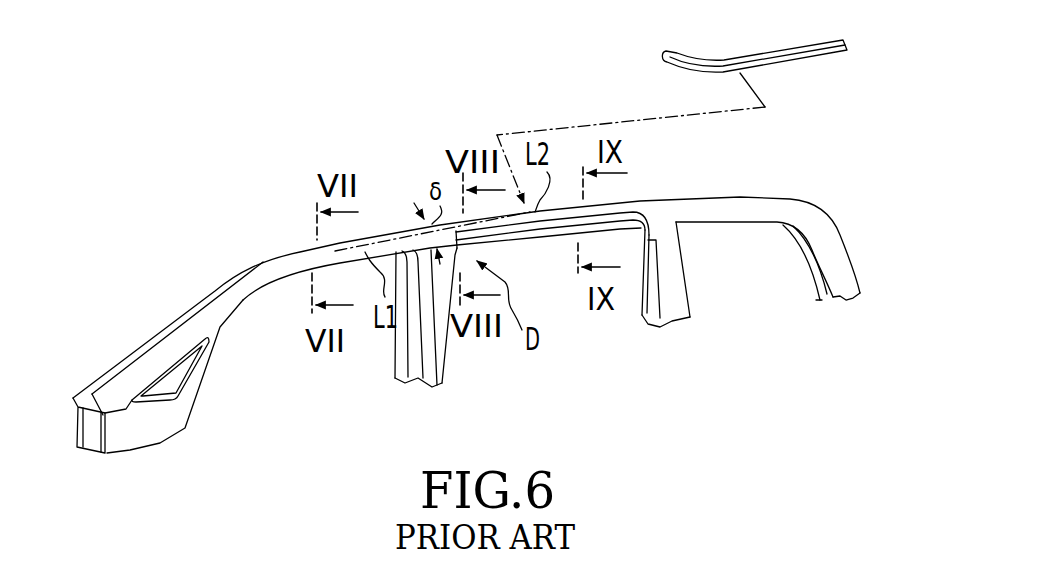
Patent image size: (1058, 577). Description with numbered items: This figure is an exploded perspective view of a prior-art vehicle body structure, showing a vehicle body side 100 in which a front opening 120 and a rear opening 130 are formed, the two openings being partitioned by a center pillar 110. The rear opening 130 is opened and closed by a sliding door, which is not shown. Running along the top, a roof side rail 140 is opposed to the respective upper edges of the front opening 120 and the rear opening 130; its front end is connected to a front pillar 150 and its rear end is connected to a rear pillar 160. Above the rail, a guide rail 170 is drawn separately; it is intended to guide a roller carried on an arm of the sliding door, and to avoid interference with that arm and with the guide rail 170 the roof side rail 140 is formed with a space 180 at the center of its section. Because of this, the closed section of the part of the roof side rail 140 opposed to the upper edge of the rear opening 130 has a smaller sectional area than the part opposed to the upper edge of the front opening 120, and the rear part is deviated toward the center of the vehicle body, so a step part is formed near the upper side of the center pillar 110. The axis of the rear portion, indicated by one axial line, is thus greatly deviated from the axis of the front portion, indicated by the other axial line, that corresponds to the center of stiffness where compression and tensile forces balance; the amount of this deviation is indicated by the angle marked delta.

The vehicle body side 100 is at (797, 183).
The center pillar 110 is at (433, 357).
The front opening 120 is at (334, 364).
The rear opening 130 is at (574, 345).
The roof side rail 140 is at (270, 241).
The front pillar 150 is at (106, 392).
The rear pillar 160 is at (840, 263).
The guide rail 170 is at (733, 60).
The space 180 is at (552, 240).